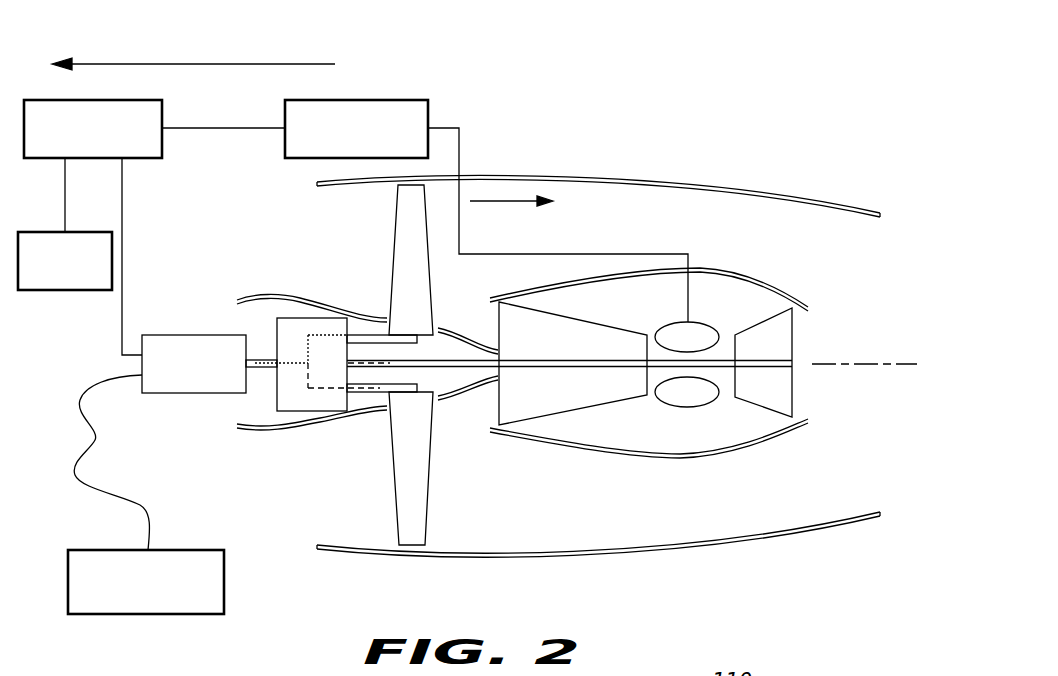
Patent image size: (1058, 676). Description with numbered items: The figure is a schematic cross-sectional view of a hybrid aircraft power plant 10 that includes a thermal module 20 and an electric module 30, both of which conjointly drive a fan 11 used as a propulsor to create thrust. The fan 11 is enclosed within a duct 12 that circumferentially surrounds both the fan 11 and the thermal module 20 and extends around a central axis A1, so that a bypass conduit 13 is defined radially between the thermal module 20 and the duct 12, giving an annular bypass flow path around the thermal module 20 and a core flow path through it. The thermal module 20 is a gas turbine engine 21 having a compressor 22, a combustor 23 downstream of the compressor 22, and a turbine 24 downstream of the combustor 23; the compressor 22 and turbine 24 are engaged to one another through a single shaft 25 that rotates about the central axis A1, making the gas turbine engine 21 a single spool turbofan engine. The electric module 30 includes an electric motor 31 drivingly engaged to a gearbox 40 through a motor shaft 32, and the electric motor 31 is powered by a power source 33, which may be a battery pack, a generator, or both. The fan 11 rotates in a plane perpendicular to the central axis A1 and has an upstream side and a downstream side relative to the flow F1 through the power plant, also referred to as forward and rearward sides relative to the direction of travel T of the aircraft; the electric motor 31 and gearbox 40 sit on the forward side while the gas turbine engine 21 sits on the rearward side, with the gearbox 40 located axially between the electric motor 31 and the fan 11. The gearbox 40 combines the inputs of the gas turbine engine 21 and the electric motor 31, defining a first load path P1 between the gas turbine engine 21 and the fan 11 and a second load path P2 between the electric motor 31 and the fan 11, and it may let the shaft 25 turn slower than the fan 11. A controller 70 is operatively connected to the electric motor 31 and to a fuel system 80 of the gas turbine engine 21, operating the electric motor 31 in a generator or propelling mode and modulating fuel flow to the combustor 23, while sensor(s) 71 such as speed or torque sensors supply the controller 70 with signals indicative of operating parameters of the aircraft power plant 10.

The aircraft power plant 10 is at (684, 112).
The fan 11 is at (410, 235).
The duct 12 is at (633, 556).
The bypass conduit 13 is at (689, 236).
The thermal module 20 is at (618, 215).
The gas turbine engine 21 is at (739, 246).
The compressor 22 is at (552, 398).
The combustor 23 is at (672, 391).
The turbine 24 is at (767, 388).
The shaft 25 is at (725, 367).
The electric module 30 is at (250, 223).
The electric motor 31 is at (173, 335).
The motor shaft 32 is at (258, 368).
The power source 33 is at (192, 550).
The gearbox 40 is at (300, 404).
The controller 70 is at (143, 100).
The sensor(s) 71 is at (65, 291).
The fuel system 80 is at (356, 100).
The direction of travel T is at (197, 63).
The flow F1 is at (507, 199).
The first load path P1 is at (357, 390).
The second load path P2 is at (308, 345).
The central axis A1 is at (863, 368).